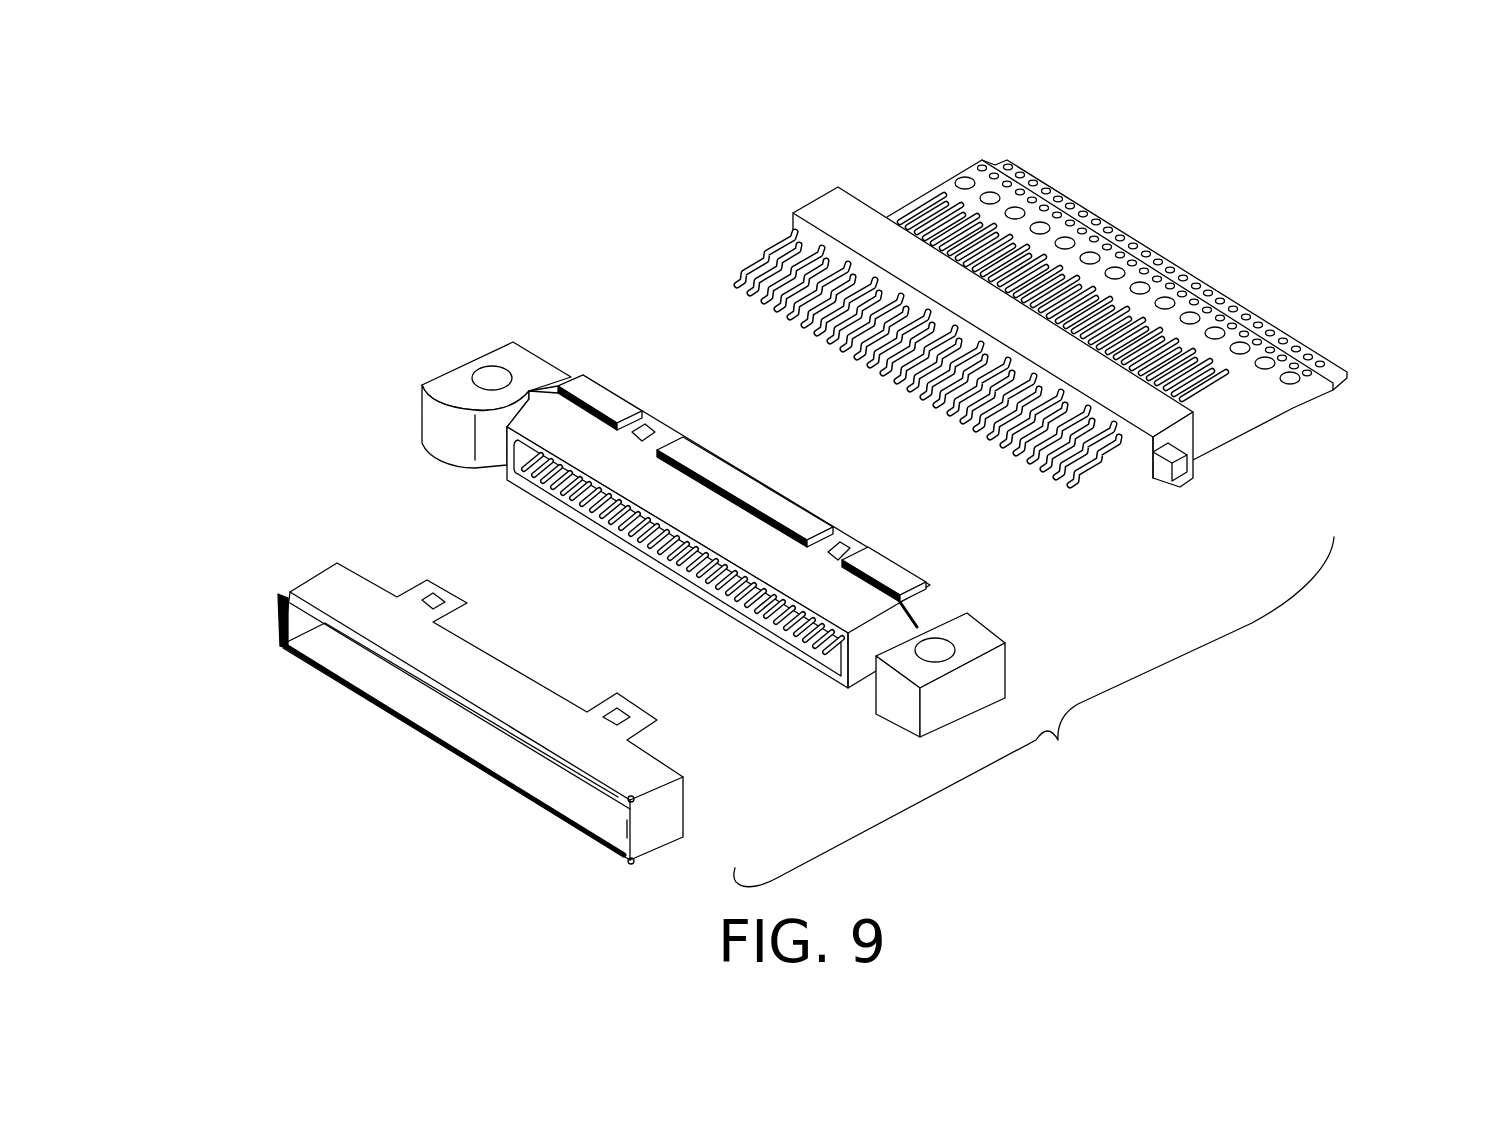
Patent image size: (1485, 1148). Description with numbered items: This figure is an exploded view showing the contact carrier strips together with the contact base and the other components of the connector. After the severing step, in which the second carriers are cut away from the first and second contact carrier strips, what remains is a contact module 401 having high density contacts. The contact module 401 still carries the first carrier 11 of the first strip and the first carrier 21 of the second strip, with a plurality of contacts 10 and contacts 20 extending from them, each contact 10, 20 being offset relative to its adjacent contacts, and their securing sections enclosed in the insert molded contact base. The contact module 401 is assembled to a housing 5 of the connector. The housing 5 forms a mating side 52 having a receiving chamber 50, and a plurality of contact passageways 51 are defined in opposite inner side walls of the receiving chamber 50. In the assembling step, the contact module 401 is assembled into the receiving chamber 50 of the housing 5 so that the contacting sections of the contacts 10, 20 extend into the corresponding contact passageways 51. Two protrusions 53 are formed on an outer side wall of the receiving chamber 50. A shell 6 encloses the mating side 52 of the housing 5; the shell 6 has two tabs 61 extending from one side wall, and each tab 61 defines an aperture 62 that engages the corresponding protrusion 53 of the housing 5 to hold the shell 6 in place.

The housing 5 is at (708, 514).
The shell 6 is at (440, 678).
The contacts 10 is at (930, 296).
The first carrier 11 is at (933, 188).
The contacts 20 is at (737, 283).
The first carrier 21 is at (1338, 380).
The receiving chamber 50 is at (528, 462).
The contact passageways 51 is at (614, 550).
The mating side 52 is at (864, 655).
The protrusions 53 is at (855, 548).
The tabs 61 is at (462, 605).
The aperture 62 is at (438, 596).
The contact module 401 is at (813, 205).